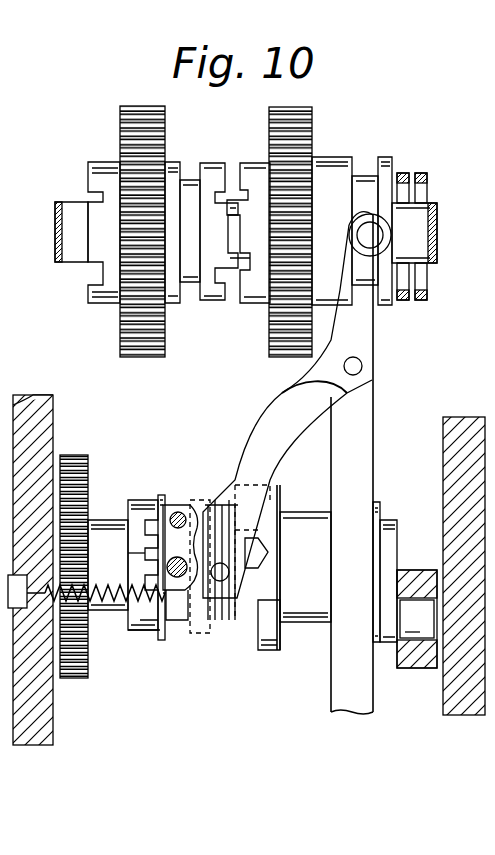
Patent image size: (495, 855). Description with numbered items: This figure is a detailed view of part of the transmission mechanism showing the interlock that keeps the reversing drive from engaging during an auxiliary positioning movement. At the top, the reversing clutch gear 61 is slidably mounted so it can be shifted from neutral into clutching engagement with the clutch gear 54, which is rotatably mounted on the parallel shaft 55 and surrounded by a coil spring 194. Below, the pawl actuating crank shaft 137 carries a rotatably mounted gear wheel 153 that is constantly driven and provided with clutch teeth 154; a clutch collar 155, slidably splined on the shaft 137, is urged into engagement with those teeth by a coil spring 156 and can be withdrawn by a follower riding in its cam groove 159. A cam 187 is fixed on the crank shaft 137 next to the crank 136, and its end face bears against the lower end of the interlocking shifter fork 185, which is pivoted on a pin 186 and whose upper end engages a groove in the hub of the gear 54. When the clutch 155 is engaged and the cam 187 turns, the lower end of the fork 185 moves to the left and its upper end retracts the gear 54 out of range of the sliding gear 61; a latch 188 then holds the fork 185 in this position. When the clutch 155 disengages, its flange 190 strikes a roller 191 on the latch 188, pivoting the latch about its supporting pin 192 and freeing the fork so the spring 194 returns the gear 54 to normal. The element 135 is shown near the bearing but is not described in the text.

The reversing clutch gear 61 is at (120, 130).
The clutch gear 54 is at (312, 122).
The coil spring 194 is at (410, 172).
The parallel shaft 55 is at (435, 205).
The interlocking shifter fork 185 is at (283, 400).
The pin 186 is at (362, 366).
The gear wheel 153 is at (78, 455).
The clutch teeth 154 is at (130, 500).
The roller 191 is at (128, 553).
The clutch collar 155 is at (150, 630).
The flange 190 is at (161, 495).
The cam groove 159 is at (183, 620).
The supporting pin 192 is at (180, 520).
The coil spring 156 is at (220, 620).
The latch 188 is at (262, 550).
The cam 187 is at (270, 650).
The pawl actuating crank shaft 137 is at (392, 520).
The bearing block 135 is at (420, 570).
The crank 136 is at (413, 625).